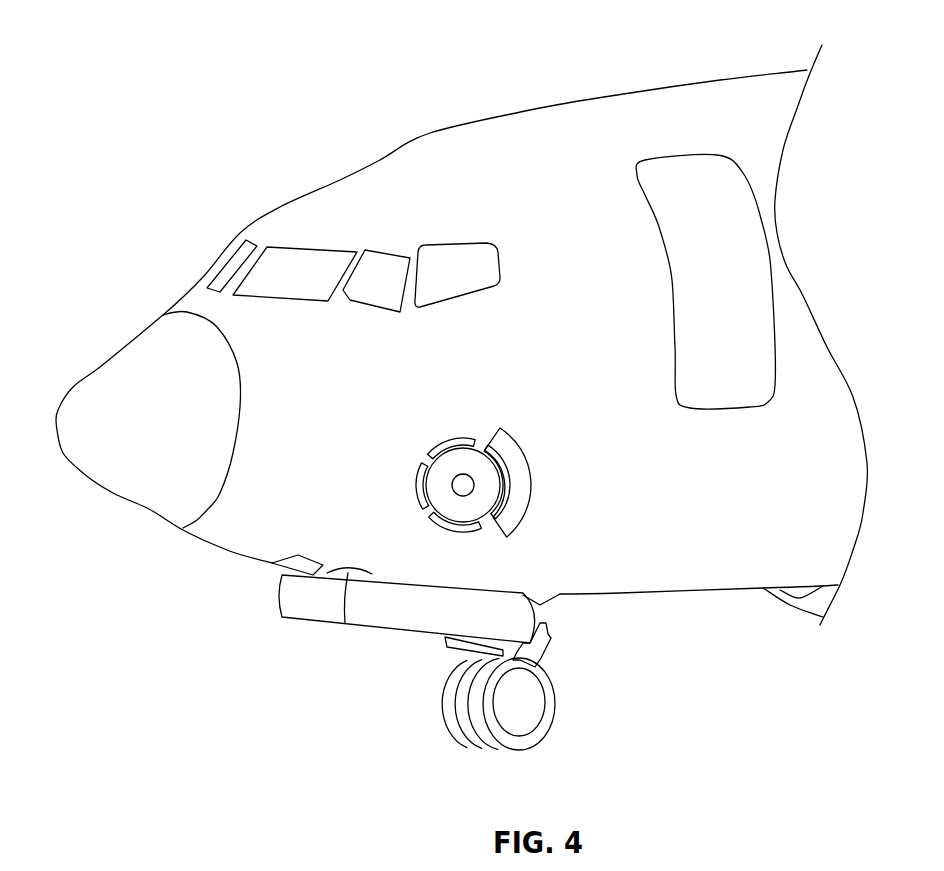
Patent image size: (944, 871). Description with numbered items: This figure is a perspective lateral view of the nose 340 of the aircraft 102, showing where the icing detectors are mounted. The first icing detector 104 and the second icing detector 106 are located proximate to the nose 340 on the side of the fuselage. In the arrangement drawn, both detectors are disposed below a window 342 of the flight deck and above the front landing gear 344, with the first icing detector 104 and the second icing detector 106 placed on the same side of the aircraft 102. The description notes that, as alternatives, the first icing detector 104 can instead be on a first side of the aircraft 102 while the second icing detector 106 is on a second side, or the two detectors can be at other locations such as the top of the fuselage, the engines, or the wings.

The aircraft 102 is at (733, 58).
The first icing detector 104 is at (455, 438).
The second icing detector 106 is at (513, 437).
The nose 340 is at (207, 558).
The window 342 is at (459, 267).
The front landing gear 344 is at (547, 703).